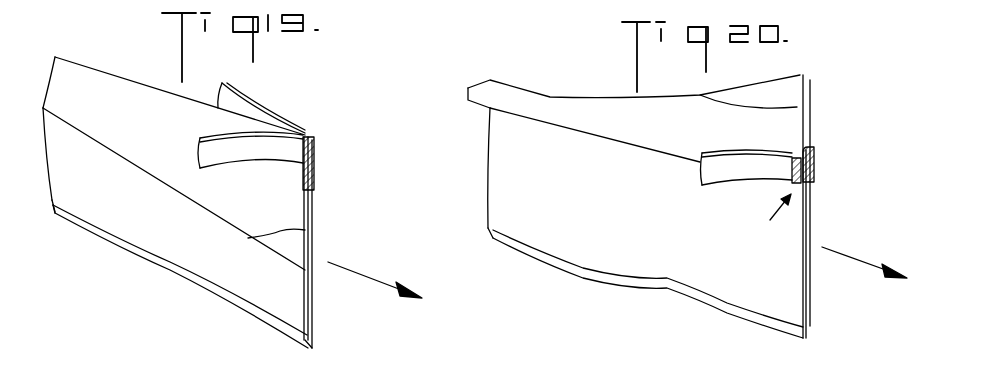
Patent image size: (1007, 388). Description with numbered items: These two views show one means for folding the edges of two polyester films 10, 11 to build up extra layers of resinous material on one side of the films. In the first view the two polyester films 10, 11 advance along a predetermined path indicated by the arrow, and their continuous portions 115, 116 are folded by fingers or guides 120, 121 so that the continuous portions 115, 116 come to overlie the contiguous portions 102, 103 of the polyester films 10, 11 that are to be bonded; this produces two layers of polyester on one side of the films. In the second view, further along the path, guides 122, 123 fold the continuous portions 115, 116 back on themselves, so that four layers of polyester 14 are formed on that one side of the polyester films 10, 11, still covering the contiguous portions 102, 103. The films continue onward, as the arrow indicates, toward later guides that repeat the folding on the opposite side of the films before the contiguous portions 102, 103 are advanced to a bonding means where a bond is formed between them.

In FIG. 19, the polyester film 10 is at (282, 308).
In FIG. 20, the polyester film 10 is at (795, 295).
In FIG. 19, the polyester film 11 is at (310, 343).
In FIG. 20, the polyester film 11 is at (812, 325).
In FIG. 20, the four layers of polyester 14 is at (768, 220).
In FIG. 19, the contiguous portion 102 is at (312, 157).
In FIG. 20, the contiguous portion 102 is at (808, 185).
In FIG. 19, the contiguous portion 103 is at (312, 152).
In FIG. 20, the contiguous portion 103 is at (812, 178).
In FIG. 19, the continuous portion 115 is at (240, 218).
In FIG. 20, the continuous portion 115 is at (796, 90).
In FIG. 19, the continuous portion 116 is at (287, 248).
In FIG. 20, the continuous portion 116 is at (690, 110).
In FIG. 19, the finger or guide 120 is at (200, 138).
In FIG. 19, the finger or guide 121 is at (280, 122).
In FIG. 20, the guide 122 is at (745, 170).
In FIG. 20, the guide 123 is at (815, 160).